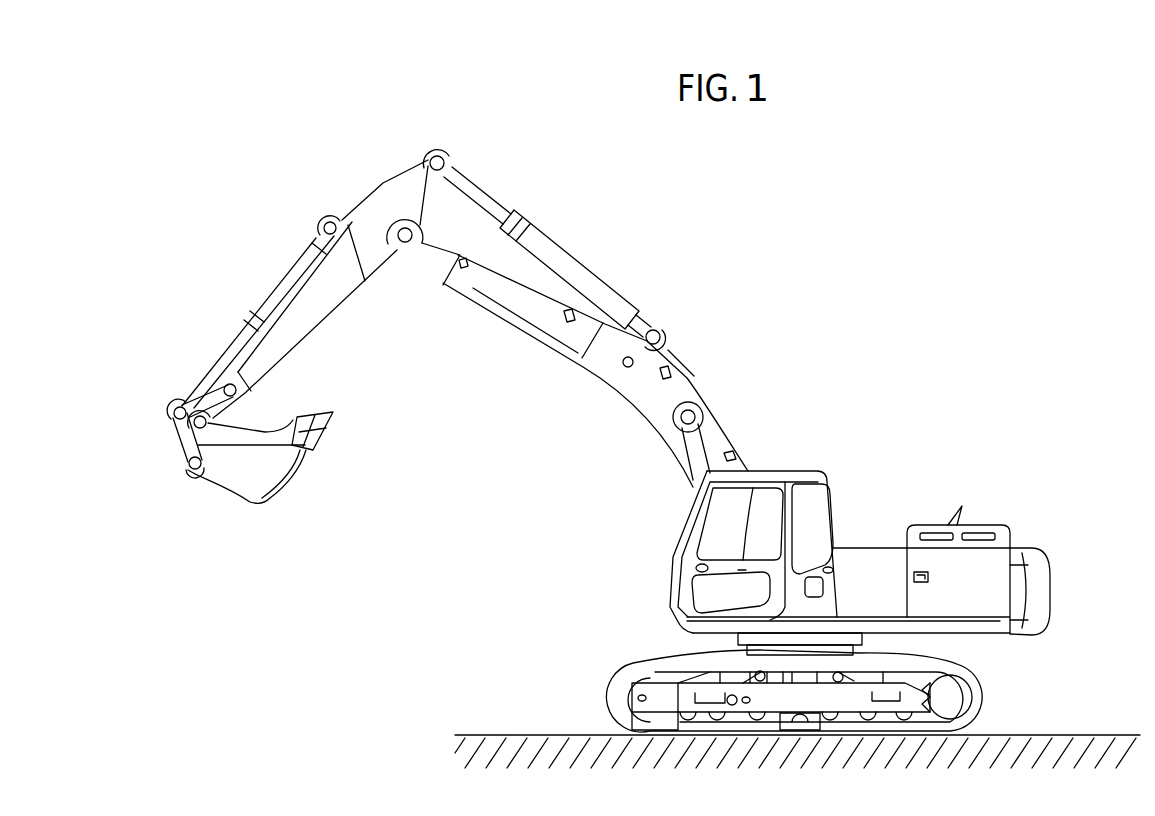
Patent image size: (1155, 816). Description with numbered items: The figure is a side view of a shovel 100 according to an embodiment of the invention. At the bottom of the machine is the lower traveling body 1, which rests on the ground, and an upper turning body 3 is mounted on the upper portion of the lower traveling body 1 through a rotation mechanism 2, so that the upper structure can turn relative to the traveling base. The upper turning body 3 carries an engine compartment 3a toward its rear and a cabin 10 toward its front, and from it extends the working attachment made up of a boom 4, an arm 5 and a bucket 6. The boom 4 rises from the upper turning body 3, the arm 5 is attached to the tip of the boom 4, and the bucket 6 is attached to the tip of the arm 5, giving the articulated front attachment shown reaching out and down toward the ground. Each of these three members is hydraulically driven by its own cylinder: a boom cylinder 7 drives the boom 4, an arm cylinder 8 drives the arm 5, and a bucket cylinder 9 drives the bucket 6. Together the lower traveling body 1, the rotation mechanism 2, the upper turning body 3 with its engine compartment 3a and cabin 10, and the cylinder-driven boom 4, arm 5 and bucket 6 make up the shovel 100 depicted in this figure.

The shovel 100 is at (818, 229).
The lower traveling body 1 is at (613, 698).
The rotation mechanism 2 is at (862, 645).
The upper turning body 3 is at (1020, 532).
The engine compartment 3a is at (873, 547).
The boom 4 is at (608, 373).
The arm 5 is at (333, 300).
The bucket 6 is at (252, 501).
The boom cylinder 7 is at (693, 452).
The arm cylinder 8 is at (597, 287).
The bucket cylinder 9 is at (283, 285).
The cabin 10 is at (817, 466).